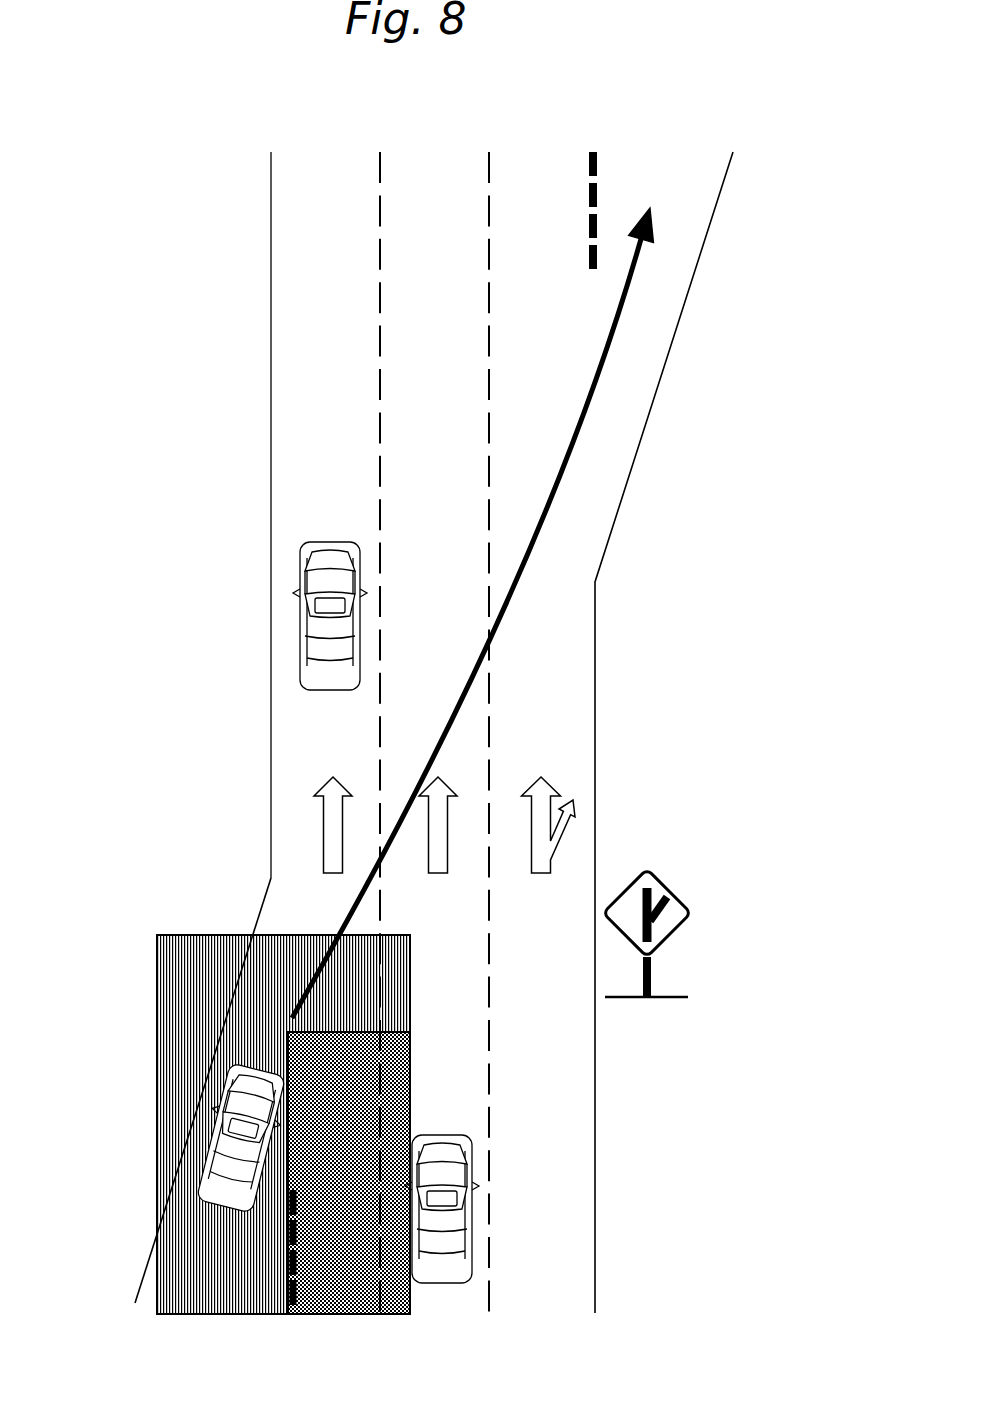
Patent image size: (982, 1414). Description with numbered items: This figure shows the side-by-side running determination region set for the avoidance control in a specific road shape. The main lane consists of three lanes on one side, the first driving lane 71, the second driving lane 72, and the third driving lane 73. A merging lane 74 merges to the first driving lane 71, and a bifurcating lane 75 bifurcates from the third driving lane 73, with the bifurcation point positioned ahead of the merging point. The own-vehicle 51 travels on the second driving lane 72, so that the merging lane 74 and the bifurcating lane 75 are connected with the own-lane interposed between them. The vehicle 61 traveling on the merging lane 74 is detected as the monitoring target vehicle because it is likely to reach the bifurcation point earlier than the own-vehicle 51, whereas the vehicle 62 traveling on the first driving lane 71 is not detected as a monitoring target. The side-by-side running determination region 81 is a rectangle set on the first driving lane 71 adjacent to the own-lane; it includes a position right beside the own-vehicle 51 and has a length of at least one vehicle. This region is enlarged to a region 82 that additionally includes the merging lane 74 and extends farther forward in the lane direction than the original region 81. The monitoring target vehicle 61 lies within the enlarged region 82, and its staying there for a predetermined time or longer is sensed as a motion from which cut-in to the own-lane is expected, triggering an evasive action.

The own-vehicle 51 is at (473, 1218).
The vehicle 61 is at (226, 1093).
The vehicle 62 is at (300, 626).
The first driving lane 71 is at (333, 172).
The second driving lane 72 is at (437, 172).
The third driving lane 73 is at (538, 172).
The merging lane 74 is at (150, 1287).
The bifurcating lane 75 is at (667, 163).
The side-by-side running determination region 81 is at (290, 1253).
The enlarged side-by-side running determination region 82 is at (157, 985).